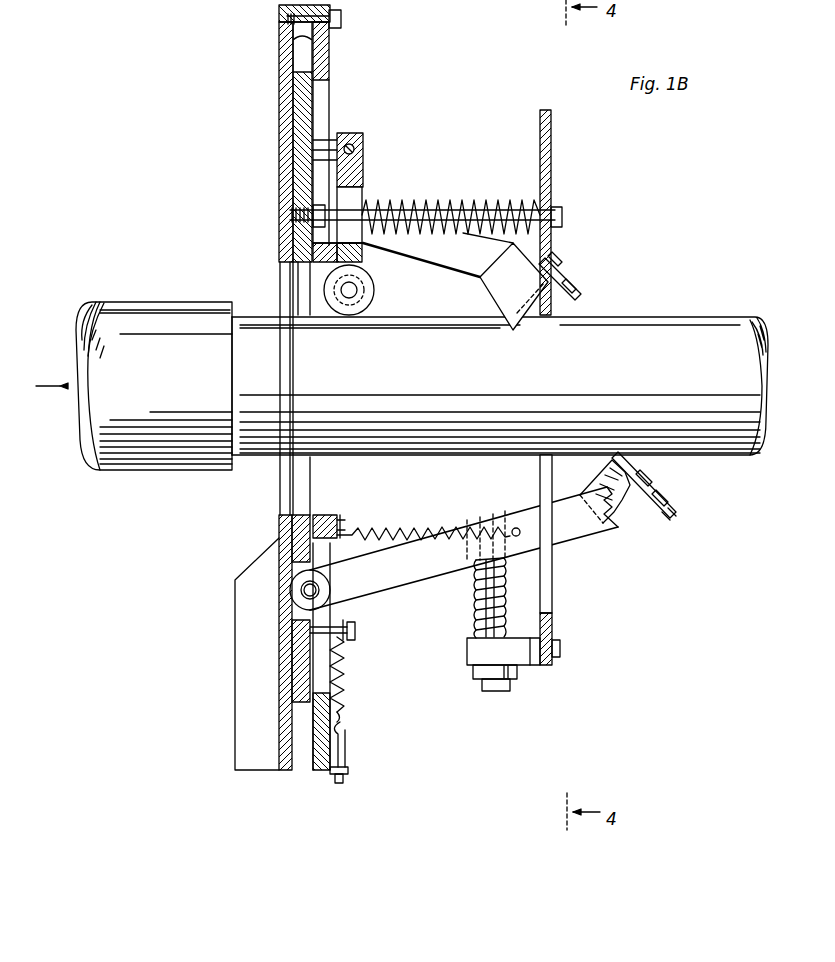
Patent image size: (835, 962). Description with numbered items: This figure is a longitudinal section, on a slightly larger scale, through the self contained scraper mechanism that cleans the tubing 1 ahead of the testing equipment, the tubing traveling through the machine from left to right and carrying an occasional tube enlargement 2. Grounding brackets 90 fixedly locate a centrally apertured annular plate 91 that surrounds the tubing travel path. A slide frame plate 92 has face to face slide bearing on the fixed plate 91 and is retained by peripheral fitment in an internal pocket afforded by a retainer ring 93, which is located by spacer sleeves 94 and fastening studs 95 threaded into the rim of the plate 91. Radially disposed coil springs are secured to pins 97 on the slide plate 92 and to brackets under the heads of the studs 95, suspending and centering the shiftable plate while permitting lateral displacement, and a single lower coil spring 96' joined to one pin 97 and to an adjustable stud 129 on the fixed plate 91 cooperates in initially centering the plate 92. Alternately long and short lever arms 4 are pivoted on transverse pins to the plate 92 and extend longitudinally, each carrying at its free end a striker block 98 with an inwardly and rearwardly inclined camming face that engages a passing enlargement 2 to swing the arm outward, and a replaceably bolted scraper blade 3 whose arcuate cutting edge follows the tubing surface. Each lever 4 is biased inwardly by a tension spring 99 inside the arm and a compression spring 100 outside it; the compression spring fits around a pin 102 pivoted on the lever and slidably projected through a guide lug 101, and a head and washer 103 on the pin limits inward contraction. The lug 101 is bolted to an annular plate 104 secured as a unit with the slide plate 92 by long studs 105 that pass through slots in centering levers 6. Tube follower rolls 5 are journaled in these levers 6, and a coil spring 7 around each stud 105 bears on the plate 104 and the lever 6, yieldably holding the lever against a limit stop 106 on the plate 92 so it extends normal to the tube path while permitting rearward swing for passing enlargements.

The pipe section 1 is at (693, 325).
The tube enlargement 2 is at (118, 302).
The scraper blade 3 is at (575, 288).
The lever arm 4 is at (462, 258).
The tube follower roll 5 is at (376, 293).
The lever 6 is at (362, 150).
The coil spring 7 is at (392, 207).
The grounding bracket 90 is at (235, 712).
The annular plate 91 is at (285, 705).
The slide frame plate 92 is at (300, 658).
The retainer ring 93 is at (330, 55).
The spacer sleeve 94 is at (302, 38).
The fastening stud 95 is at (342, 20).
The lower coil spring 96' is at (364, 679).
The pin 97 is at (355, 632).
The striker block 98 is at (583, 490).
The tension spring 99 is at (388, 530).
The compression spring 100 is at (473, 568).
The guide lug 101 is at (467, 648).
The pin 102 is at (503, 608).
The head and washer 103 is at (472, 685).
The annular plate 104 is at (553, 622).
The long stud 105 is at (443, 205).
The limit stop 106 is at (320, 262).
The adjustable stud 129 is at (346, 766).